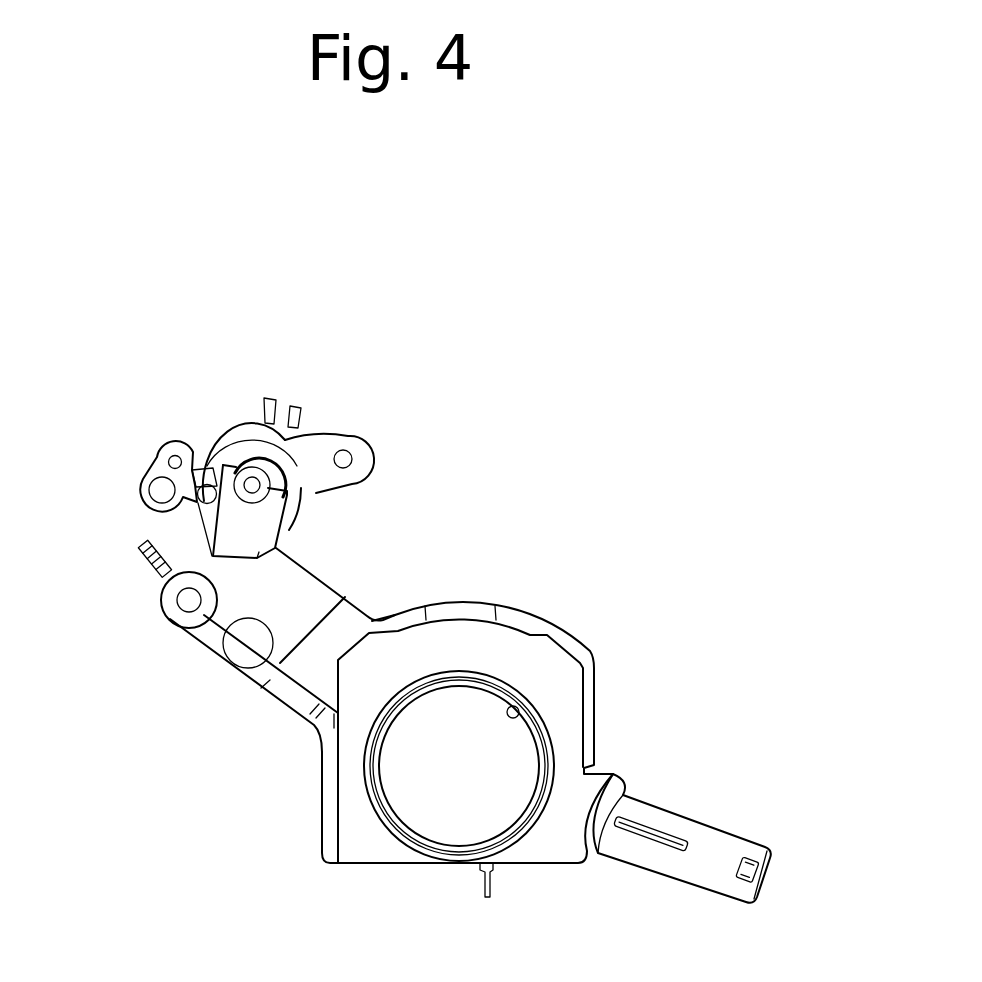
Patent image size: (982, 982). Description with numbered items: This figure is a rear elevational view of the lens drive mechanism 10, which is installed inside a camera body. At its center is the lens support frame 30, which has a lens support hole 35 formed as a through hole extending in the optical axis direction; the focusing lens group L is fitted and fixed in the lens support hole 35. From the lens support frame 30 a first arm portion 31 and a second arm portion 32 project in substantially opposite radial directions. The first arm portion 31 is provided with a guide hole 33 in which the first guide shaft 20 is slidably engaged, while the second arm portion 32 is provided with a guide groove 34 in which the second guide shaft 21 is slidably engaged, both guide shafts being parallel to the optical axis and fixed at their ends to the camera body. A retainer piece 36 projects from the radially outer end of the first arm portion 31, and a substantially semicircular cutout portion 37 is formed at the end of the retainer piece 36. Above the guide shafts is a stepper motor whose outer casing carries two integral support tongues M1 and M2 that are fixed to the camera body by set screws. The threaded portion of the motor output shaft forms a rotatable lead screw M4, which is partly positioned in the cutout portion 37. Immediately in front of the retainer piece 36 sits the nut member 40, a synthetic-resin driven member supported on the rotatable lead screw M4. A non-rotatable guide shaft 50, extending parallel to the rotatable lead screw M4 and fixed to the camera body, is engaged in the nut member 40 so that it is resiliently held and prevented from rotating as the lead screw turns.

The lens drive mechanism 10 is at (598, 485).
The first guide shaft 20 is at (191, 600).
The second guide shaft 21 is at (763, 878).
The lens support frame 30 is at (568, 723).
The first arm portion 31 is at (318, 595).
The second arm portion 32 is at (681, 826).
The guide hole 33 is at (186, 598).
The guide groove 34 is at (768, 867).
The lens support hole 35 is at (518, 706).
The retainer piece 36 is at (268, 523).
The cutout portion 37 is at (266, 466).
The nut member 40 is at (205, 474).
The guide shaft 50 is at (198, 503).
The focusing lens group L is at (424, 798).
The support tongue M1 is at (158, 464).
The support tongue M2 is at (352, 460).
The rotatable lead screw M4 is at (256, 478).